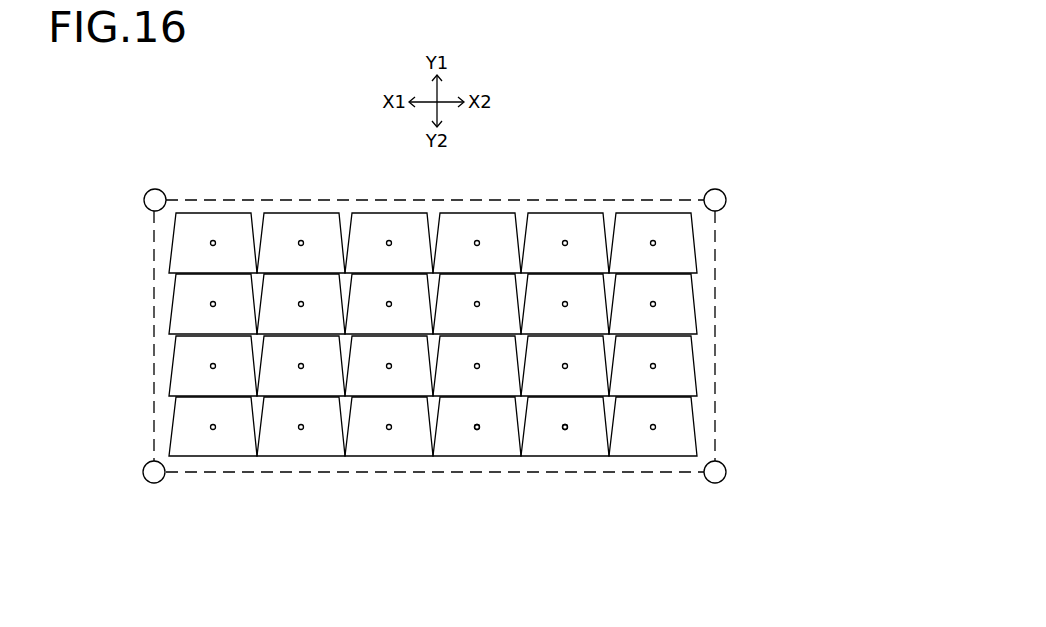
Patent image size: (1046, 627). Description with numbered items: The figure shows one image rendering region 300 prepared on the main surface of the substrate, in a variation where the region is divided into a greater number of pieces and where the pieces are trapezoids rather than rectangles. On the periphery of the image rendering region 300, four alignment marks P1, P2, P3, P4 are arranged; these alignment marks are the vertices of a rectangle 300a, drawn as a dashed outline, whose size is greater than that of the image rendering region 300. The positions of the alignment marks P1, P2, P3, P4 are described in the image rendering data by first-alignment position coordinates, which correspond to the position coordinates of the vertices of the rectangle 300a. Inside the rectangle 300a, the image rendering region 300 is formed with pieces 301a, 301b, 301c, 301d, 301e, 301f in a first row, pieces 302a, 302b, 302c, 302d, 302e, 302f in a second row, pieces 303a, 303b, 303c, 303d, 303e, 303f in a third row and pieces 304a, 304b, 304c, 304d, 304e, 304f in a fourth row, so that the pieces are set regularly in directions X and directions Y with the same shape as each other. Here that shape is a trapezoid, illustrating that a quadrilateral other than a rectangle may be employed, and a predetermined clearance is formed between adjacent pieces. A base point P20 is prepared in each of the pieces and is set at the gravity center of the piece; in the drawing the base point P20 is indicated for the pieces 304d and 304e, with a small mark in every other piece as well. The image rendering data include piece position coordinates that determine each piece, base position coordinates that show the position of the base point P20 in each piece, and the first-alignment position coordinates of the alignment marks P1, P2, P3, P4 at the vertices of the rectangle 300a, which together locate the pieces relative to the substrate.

The image rendering region 300 is at (450, 213).
The rectangle 300a is at (363, 197).
The piece 301a is at (191, 238).
The piece 301b is at (279, 238).
The piece 301c is at (367, 238).
The piece 301d is at (455, 238).
The piece 301e is at (543, 238).
The piece 301f is at (631, 238).
The piece 302a is at (191, 299).
The piece 302b is at (279, 299).
The piece 302c is at (367, 299).
The piece 302d is at (455, 299).
The piece 302e is at (543, 299).
The piece 302f is at (631, 299).
The piece 303a is at (191, 361).
The piece 303b is at (279, 361).
The piece 303c is at (367, 361).
The piece 303d is at (455, 361).
The piece 303e is at (543, 361).
The piece 303f is at (631, 361).
The piece 304a is at (191, 422).
The piece 304b is at (279, 422).
The piece 304c is at (367, 422).
The piece 304d is at (455, 422).
The piece 304e is at (543, 422).
The piece 304f is at (631, 422).
The base point P20 is at (566, 430).
The alignment mark P1 is at (154, 483).
The alignment mark P2 is at (714, 484).
The alignment mark P3 is at (712, 189).
The alignment mark P4 is at (152, 189).